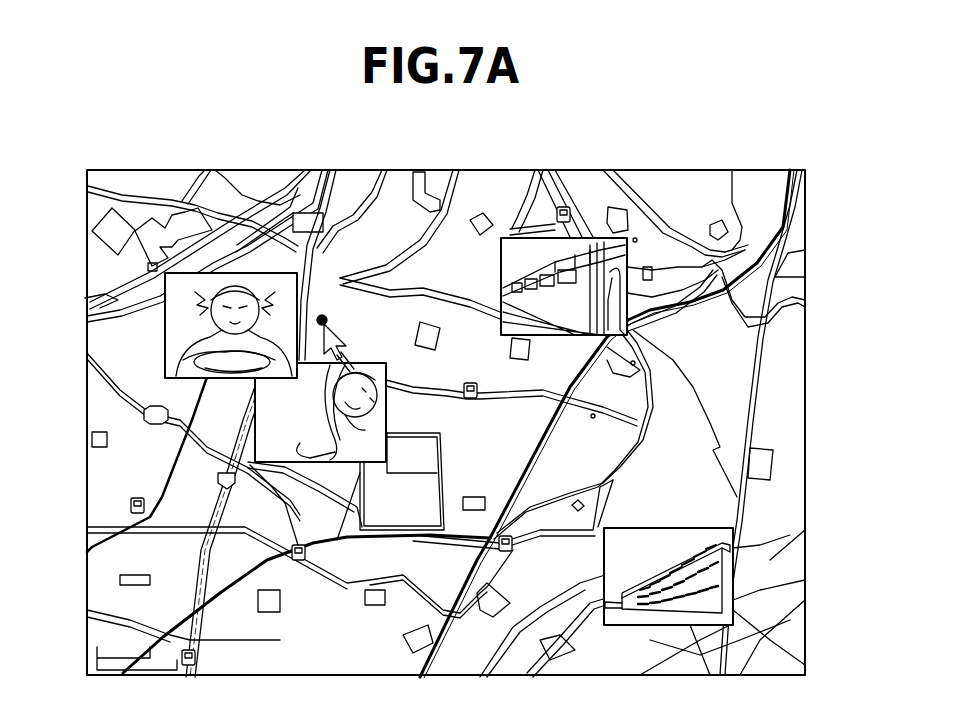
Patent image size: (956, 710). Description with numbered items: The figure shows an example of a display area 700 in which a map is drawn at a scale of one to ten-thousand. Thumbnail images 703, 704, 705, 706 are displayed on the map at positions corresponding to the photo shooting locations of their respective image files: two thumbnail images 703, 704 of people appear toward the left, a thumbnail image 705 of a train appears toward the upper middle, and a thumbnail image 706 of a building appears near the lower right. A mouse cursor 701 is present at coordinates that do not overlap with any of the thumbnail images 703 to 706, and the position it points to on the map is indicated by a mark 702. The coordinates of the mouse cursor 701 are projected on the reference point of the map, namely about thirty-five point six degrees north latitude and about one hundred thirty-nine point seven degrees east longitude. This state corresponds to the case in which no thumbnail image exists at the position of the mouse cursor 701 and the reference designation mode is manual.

The map screen 700 is at (163, 170).
The mouse cursor 701 is at (346, 338).
The position mark 702 is at (323, 316).
The thumbnail image 703 is at (175, 312).
The thumbnail image 704 is at (270, 437).
The thumbnail image 705 is at (517, 245).
The thumbnail image 706 is at (727, 538).